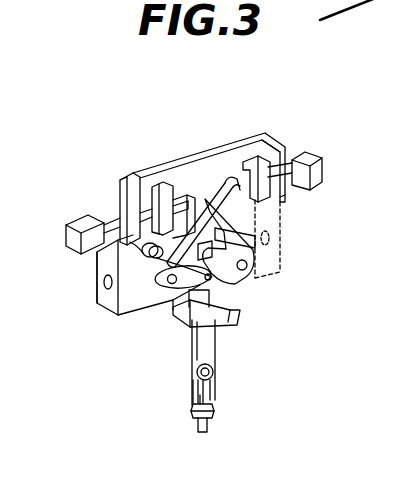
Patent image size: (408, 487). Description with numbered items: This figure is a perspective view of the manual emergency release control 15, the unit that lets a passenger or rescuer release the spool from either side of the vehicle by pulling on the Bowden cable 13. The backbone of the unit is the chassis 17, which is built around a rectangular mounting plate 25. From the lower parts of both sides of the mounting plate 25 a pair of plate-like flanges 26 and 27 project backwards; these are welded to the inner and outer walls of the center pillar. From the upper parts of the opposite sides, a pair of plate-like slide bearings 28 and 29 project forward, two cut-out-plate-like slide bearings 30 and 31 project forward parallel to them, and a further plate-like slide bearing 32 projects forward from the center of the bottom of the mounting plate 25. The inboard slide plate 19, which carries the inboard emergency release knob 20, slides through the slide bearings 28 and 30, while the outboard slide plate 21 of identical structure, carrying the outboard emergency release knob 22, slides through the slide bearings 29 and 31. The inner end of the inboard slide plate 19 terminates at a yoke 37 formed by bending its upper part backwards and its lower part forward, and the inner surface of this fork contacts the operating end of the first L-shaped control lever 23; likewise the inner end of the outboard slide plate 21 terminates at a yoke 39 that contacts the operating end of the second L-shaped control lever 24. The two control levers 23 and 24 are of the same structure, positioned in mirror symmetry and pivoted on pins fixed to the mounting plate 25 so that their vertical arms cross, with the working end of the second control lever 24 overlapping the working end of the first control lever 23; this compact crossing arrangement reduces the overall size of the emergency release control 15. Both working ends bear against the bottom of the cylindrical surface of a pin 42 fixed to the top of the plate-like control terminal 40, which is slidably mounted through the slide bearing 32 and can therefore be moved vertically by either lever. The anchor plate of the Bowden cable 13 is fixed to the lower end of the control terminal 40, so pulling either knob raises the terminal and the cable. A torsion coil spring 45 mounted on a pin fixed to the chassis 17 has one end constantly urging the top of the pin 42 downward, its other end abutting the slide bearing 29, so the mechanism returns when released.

The Bowden cable 13 is at (207, 428).
The manual emergency release control 15 is at (244, 128).
The chassis 17 is at (159, 320).
The inboard slide plate 19 is at (305, 160).
The inboard emergency release knob 20 is at (316, 172).
The outboard slide plate 21 is at (110, 220).
The outboard emergency release knob 22 is at (65, 238).
The first L-shaped control lever 23 is at (158, 282).
The second L-shaped control lever 24 is at (227, 240).
The rectangular mounting plate 25 is at (118, 314).
The plate-like flange 26 is at (272, 257).
The plate-like flange 27 is at (95, 298).
The plate-like slide bearing 28 is at (283, 141).
The plate-like slide bearing 29 is at (122, 195).
The cut-out-plate-like slide bearing 30 is at (253, 178).
The cut-out-plate-like slide bearing 31 is at (157, 198).
The plate-like slide bearing 32 is at (232, 318).
The yoke 37 is at (229, 170).
The yoke 39 is at (180, 197).
The control terminal 40 is at (197, 353).
The pin 42 is at (230, 287).
The torsion coil spring 45 is at (98, 270).